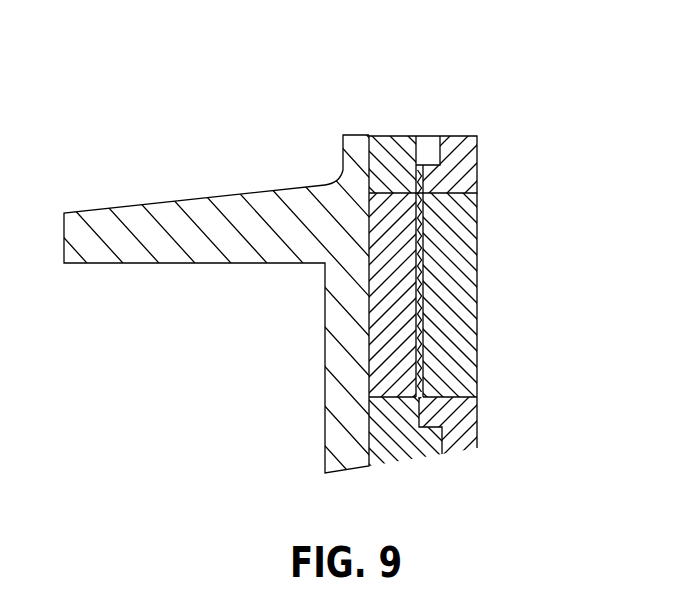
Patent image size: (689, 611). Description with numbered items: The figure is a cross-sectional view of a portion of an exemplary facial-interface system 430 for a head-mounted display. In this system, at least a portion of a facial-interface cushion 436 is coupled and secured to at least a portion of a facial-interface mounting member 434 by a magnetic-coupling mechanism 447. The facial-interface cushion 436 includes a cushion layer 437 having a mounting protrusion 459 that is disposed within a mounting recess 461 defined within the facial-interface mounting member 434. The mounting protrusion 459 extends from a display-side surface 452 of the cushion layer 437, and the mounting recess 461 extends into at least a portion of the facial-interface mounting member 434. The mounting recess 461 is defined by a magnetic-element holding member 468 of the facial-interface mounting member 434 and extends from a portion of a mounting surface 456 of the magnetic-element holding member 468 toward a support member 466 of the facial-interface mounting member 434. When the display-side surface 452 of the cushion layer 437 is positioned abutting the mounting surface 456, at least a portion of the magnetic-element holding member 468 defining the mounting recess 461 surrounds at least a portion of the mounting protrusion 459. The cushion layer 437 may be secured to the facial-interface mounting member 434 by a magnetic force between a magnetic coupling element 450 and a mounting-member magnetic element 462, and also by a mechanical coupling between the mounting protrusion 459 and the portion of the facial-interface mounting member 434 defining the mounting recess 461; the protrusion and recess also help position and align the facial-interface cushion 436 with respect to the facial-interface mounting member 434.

The facial-interface system 430 is at (230, 114).
The facial-interface mounting member 434 is at (343, 160).
The facial-interface cushion 436 is at (457, 136).
The cushion layer 437 is at (470, 152).
The magnetic-coupling mechanism 447 is at (517, 444).
The magnetic coupling element 450 is at (477, 233).
The display-side surface 452 is at (447, 432).
The mounting surface 456 is at (452, 450).
The mounting protrusion 459 is at (417, 415).
The mounting recess 461 is at (427, 158).
The mounting-member magnetic element 462 is at (383, 335).
The support member 466 is at (332, 382).
The magnetic-element holding member 468 is at (385, 143).